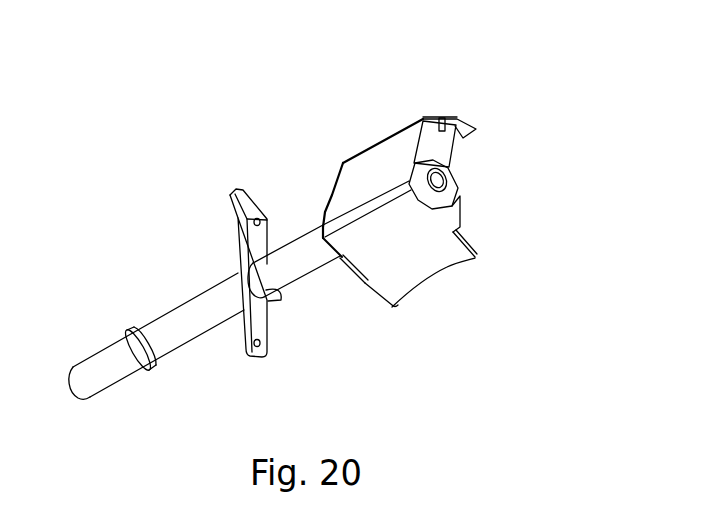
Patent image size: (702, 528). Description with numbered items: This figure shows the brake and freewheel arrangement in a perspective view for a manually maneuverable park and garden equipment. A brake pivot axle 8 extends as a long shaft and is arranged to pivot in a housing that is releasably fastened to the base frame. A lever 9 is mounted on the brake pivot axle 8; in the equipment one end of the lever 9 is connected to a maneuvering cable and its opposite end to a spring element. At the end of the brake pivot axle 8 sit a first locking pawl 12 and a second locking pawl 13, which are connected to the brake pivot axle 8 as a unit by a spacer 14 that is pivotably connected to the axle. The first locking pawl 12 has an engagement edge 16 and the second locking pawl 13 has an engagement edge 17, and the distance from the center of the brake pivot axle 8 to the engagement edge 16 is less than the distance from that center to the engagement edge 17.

The brake pivot axle 8 is at (168, 327).
The lever 9 is at (257, 322).
The first locking pawl 12 is at (408, 260).
The second locking pawl 13 is at (468, 122).
The spacer 14 is at (360, 182).
The engagement edge 16 is at (433, 277).
The engagement edge 17 is at (467, 137).